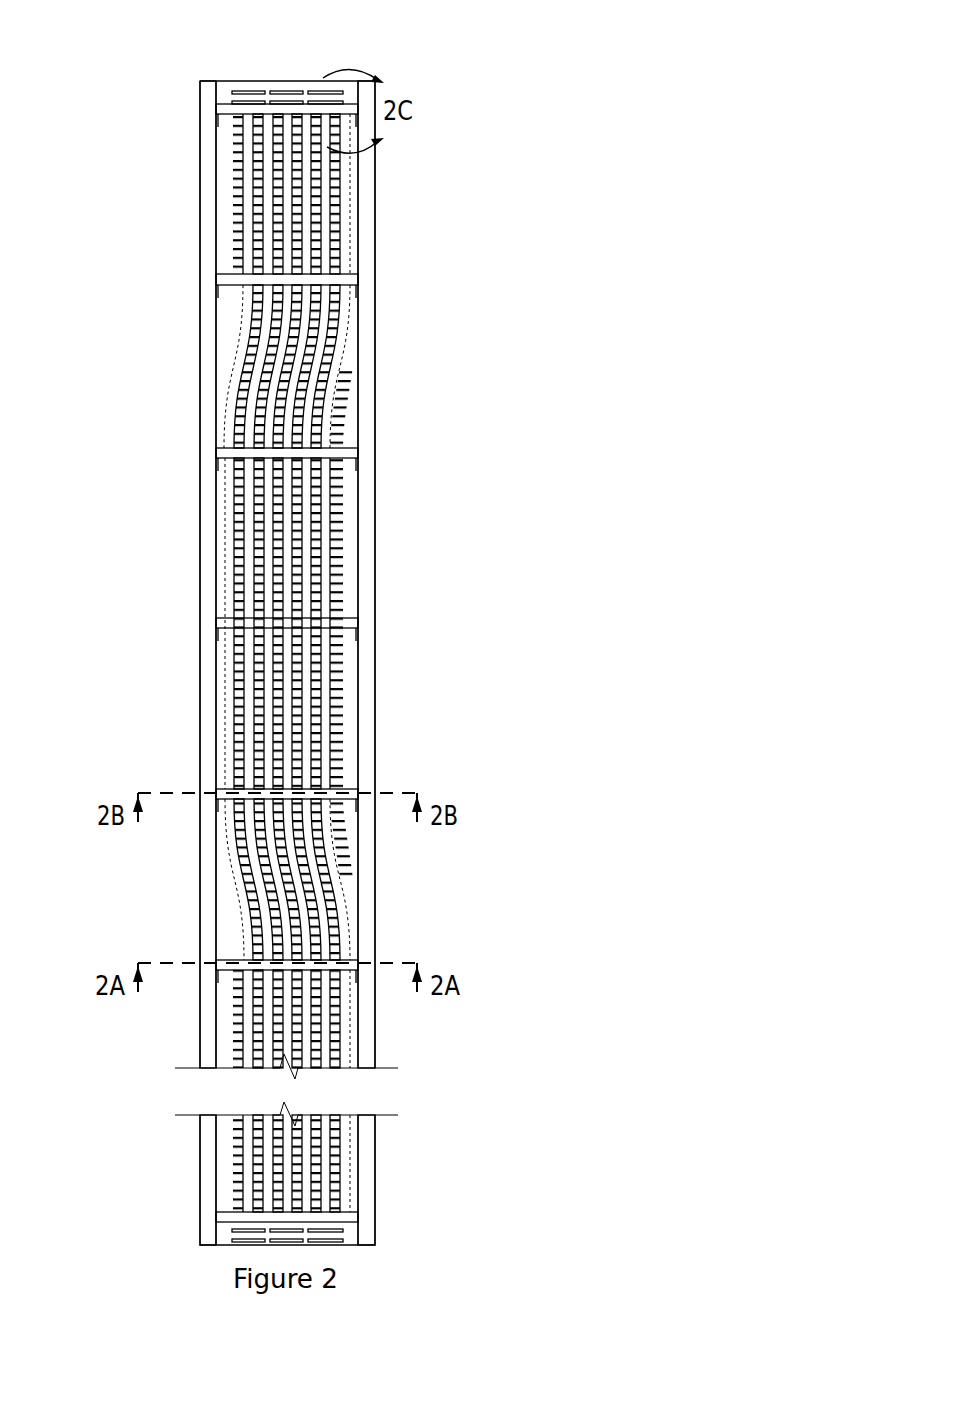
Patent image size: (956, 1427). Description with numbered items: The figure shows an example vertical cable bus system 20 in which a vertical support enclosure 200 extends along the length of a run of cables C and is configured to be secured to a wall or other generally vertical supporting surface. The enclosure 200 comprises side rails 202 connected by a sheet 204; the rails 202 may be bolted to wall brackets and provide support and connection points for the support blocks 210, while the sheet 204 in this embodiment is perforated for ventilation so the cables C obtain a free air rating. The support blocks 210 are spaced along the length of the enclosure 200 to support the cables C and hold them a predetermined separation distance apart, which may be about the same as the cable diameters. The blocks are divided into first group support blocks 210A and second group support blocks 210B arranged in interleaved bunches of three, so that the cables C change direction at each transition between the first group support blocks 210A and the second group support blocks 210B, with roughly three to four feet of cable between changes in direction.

The vertical cable bus system 20 is at (520, 97).
The vertical support enclosure 200 is at (395, 155).
The side rails 202 is at (207, 155).
The sheet 204 is at (267, 81).
The support blocks 210 is at (447, 243).
The first group support blocks 210A is at (225, 275).
The second group support blocks 210B is at (353, 452).
The cables C is at (392, 663).